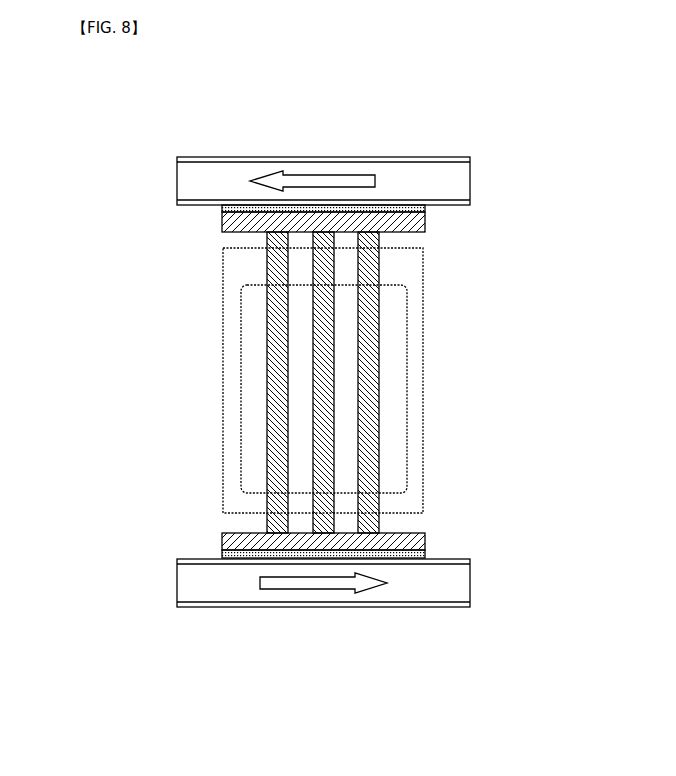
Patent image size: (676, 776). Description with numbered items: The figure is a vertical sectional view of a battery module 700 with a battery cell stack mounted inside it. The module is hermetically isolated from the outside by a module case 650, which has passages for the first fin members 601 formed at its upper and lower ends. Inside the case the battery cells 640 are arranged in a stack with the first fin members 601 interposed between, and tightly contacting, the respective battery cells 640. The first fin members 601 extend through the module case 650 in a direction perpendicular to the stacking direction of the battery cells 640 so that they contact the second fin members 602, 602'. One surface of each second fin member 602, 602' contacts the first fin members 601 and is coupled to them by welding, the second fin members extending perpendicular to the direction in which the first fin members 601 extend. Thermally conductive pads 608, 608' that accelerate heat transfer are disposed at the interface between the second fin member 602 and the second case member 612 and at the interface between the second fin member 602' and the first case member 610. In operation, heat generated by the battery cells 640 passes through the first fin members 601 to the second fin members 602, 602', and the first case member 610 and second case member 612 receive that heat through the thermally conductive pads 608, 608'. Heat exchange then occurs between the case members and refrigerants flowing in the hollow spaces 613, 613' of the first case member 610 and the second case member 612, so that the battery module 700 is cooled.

The battery module 700 is at (149, 160).
The first case member 610 is at (176, 198).
The hollow space 613' is at (369, 144).
The thermally conductive pad 608' is at (370, 226).
The second fin member 602' is at (283, 258).
The module case 650 is at (424, 338).
The battery cells 640 is at (243, 472).
The first fin members 601 is at (381, 395).
The second fin member 602 is at (355, 504).
The thermally conductive pad 608 is at (275, 529).
The second case member 612 is at (190, 607).
The hollow space 613 is at (371, 624).